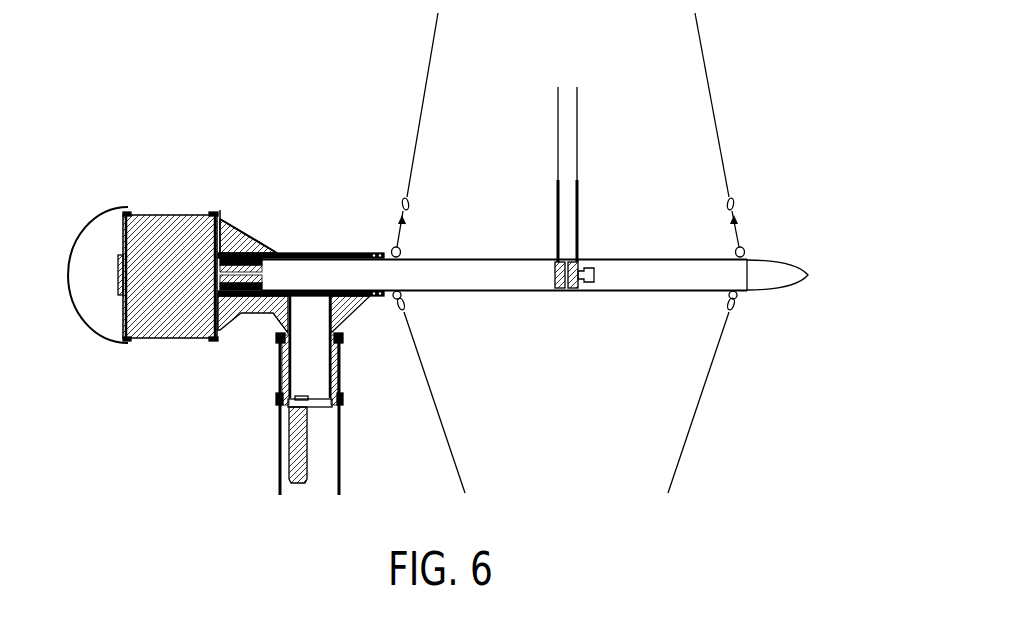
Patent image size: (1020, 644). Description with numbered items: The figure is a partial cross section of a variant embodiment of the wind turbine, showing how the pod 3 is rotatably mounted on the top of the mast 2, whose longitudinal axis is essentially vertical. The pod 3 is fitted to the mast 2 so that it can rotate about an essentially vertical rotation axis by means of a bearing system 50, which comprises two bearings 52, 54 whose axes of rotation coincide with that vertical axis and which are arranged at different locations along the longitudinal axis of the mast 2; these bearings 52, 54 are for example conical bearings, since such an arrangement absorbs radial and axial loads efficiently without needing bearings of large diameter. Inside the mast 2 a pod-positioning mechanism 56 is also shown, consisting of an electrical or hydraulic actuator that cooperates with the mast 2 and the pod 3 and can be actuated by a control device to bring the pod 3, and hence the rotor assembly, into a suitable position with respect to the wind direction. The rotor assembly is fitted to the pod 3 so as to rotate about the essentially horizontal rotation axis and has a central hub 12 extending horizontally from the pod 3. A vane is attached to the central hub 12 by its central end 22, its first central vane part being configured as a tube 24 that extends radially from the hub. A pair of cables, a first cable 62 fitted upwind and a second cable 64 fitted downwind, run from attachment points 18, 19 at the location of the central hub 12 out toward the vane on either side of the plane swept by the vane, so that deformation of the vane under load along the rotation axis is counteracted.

The mast 2 is at (340, 465).
The pod 3 is at (243, 240).
The central hub 12 is at (623, 266).
The attachment point 18 is at (395, 247).
The attachment point 19 is at (744, 248).
The central end 22 is at (557, 238).
The tube 24 is at (565, 153).
The bearing system 50 is at (189, 393).
The bearing 52 is at (280, 340).
The bearing 54 is at (282, 400).
The pod-positioning mechanism 56 is at (293, 462).
The first cable 62 is at (413, 155).
The second cable 64 is at (722, 160).